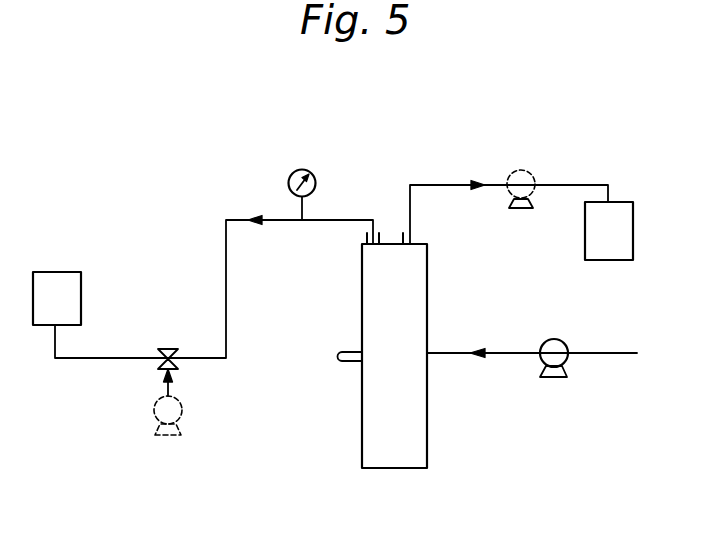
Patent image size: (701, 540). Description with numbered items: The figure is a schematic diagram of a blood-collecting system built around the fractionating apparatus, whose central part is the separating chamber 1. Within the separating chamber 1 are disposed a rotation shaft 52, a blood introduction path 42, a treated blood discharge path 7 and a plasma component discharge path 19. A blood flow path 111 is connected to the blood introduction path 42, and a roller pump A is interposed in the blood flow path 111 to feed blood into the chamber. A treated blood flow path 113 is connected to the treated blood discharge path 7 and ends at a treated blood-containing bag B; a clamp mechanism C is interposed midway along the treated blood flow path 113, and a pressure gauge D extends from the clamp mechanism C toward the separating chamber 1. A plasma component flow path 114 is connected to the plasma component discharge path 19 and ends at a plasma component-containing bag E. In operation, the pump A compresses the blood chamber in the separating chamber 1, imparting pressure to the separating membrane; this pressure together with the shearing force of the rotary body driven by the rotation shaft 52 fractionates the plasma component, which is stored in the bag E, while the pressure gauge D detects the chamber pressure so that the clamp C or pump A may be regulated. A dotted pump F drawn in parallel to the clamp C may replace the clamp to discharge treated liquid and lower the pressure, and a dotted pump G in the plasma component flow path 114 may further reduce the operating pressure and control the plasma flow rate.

The separating chamber 1 is at (427, 455).
The treated liquid discharge path 7 is at (367, 236).
The separated component discharge path 19 is at (413, 236).
The liquid introduction path 42 is at (440, 352).
The rotation shaft 52 is at (346, 363).
The blood flow path 111 is at (607, 357).
The treated blood flow path 113 is at (226, 296).
The plasma component flow path 114 is at (441, 183).
The pump A is at (565, 341).
The treated blood-containing bag B is at (81, 290).
The clamp mechanism C is at (170, 347).
The pressure gauge D is at (316, 180).
The plasma component-containing bag E is at (633, 238).
The pump F is at (182, 412).
The pump G is at (535, 176).